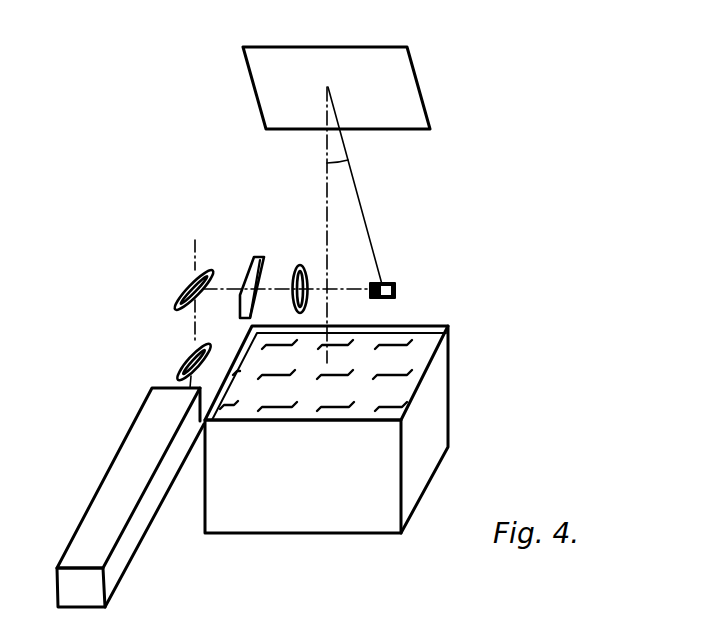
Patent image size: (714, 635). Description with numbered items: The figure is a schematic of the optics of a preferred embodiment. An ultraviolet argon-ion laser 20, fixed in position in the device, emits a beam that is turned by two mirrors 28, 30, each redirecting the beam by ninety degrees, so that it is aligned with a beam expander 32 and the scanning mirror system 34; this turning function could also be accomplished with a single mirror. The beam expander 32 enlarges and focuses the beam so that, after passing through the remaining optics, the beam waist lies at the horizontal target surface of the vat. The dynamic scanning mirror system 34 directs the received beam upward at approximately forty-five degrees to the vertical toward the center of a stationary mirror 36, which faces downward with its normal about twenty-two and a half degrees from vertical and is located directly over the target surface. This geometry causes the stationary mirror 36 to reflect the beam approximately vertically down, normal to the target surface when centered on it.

The ultraviolet argon-ion laser 20 is at (113, 477).
The mirror 28 is at (178, 368).
The mirror 30 is at (196, 278).
The beam expander 32 is at (259, 257).
The scanning mirror system 34 is at (395, 290).
The stationary mirror 36 is at (356, 47).